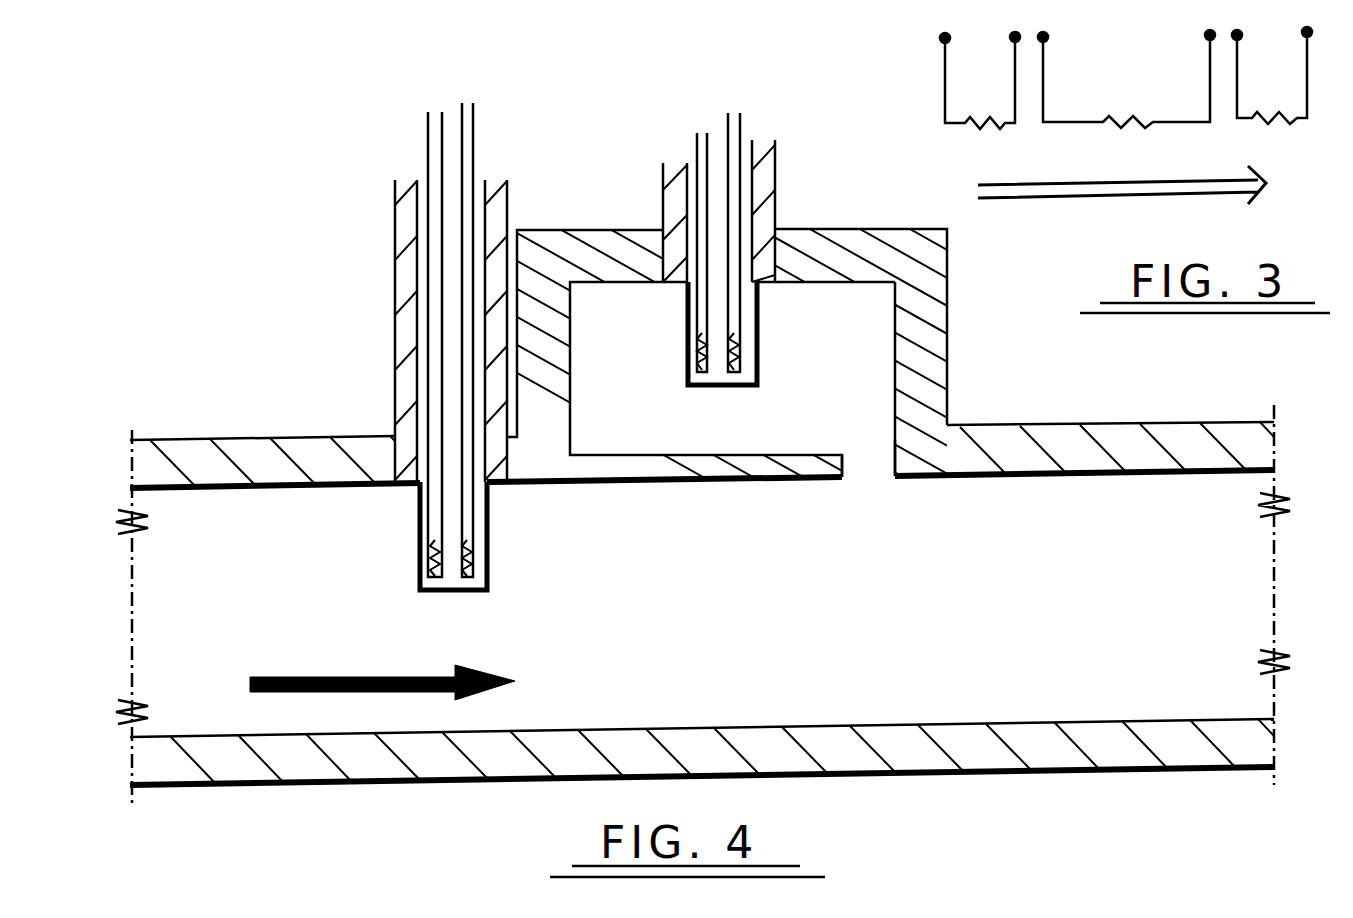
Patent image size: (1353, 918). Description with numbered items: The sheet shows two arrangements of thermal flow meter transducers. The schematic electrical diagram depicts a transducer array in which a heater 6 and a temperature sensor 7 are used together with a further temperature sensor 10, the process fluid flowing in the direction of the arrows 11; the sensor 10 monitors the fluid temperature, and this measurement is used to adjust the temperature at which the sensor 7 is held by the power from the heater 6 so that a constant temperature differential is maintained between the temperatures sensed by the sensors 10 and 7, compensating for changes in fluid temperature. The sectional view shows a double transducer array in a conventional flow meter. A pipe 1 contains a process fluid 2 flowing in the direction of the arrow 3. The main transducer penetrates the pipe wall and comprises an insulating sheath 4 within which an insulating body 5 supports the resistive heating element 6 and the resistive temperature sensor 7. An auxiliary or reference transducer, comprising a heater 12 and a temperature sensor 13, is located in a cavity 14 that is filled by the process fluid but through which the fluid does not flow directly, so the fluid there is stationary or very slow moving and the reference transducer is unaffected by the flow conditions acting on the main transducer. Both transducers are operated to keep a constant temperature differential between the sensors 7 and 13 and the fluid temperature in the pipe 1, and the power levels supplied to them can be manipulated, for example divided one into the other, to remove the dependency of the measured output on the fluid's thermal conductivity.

In FIG. 4, the pipe 1 is at (330, 452).
In FIG. 4, the process fluid 2 is at (232, 498).
In FIG. 4, the arrow 3 is at (337, 677).
In FIG. 4, the insulating sheath 4 is at (405, 328).
In FIG. 4, the insulating body 5 is at (442, 346).
In FIG. 4, the resistive heating element 6 is at (428, 558).
In FIG. 3, the resistive heating element 6 is at (1113, 113).
In FIG. 4, the resistive temperature sensor 7 is at (470, 555).
In FIG. 3, the resistive temperature sensor 7 is at (1280, 110).
In FIG. 3, the further temperature sensor 10 is at (988, 110).
In FIG. 3, the arrows 11 is at (1224, 187).
In FIG. 4, the heater 12 is at (695, 348).
In FIG. 4, the temperature sensor 13 is at (740, 348).
In FIG. 4, the cavity 14 is at (862, 465).